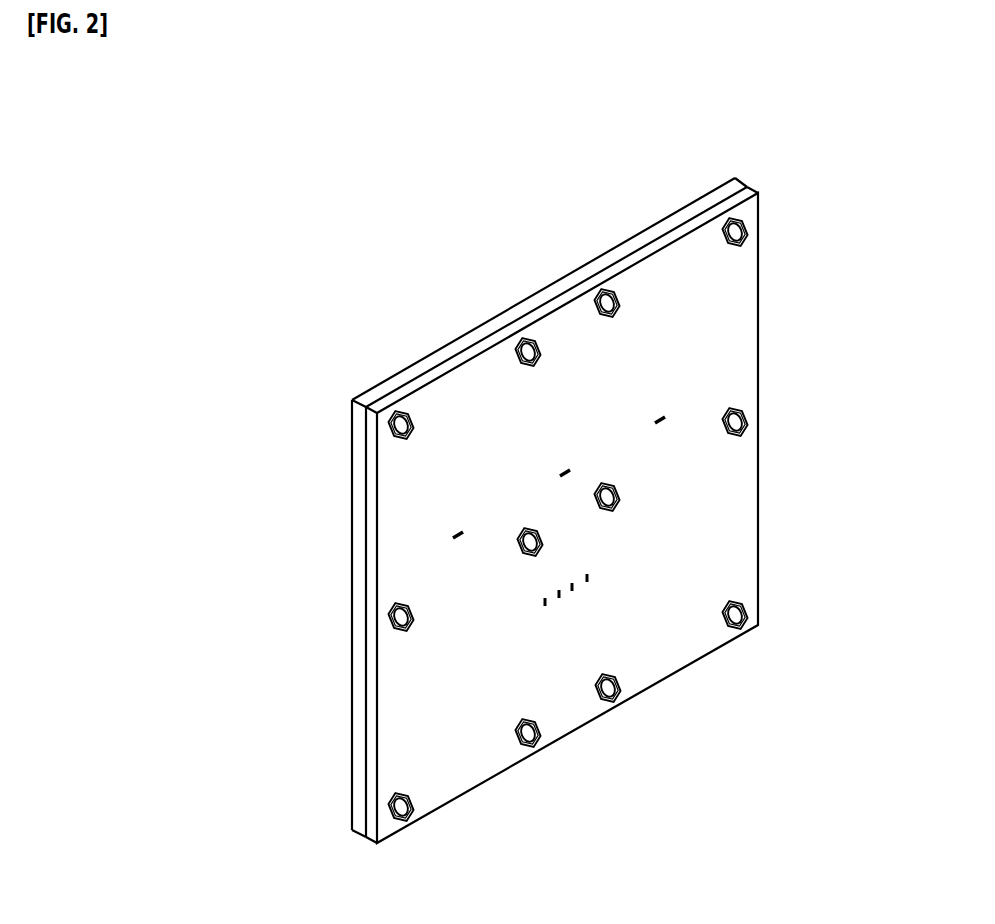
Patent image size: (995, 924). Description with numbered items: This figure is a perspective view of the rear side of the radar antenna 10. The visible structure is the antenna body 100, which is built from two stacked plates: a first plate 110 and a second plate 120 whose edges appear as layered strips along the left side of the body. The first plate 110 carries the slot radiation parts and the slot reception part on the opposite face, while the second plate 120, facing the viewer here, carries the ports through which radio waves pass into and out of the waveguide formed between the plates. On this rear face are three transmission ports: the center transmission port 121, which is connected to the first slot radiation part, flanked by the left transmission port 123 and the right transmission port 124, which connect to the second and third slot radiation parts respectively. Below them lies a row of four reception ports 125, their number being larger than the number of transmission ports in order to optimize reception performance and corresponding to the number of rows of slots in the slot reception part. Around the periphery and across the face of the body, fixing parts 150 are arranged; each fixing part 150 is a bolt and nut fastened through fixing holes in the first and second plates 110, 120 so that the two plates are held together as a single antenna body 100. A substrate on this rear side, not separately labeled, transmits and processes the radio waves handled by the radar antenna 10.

The radar antenna 10 is at (302, 345).
The antenna body 100 is at (195, 504).
The first plate 110 is at (358, 580).
The second plate 120 is at (377, 513).
The center transmission port 121 is at (565, 468).
The left transmission port 123 is at (460, 528).
The right transmission port 124 is at (660, 416).
The reception ports 125 is at (587, 583).
The fixing parts 150 is at (750, 430).